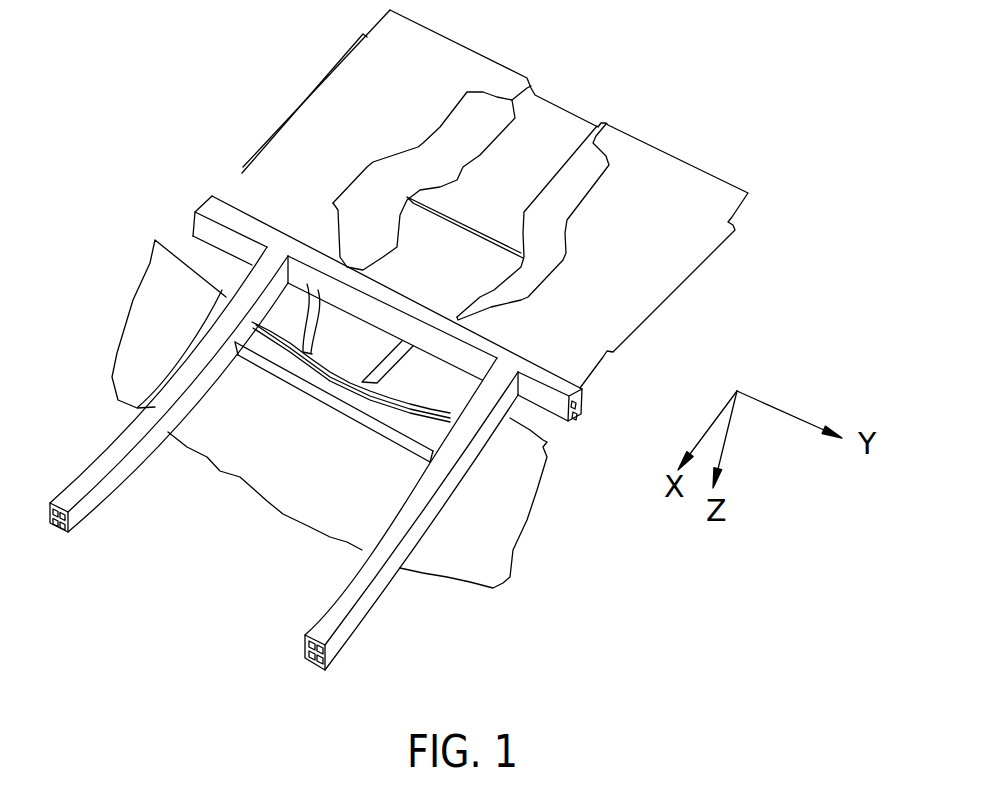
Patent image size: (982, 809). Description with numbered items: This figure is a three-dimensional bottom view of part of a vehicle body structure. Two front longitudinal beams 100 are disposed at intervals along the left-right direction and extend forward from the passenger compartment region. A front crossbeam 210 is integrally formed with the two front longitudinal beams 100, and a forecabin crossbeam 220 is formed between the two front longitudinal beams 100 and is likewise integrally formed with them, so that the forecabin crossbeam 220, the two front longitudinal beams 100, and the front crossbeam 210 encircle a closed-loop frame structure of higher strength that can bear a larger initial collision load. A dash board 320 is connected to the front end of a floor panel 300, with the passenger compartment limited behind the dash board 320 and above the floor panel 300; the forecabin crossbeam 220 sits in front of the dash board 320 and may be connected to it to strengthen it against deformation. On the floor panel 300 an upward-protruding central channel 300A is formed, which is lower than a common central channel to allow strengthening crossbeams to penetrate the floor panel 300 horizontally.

The front longitudinal beam 100 is at (108, 470).
The front crossbeam 210 is at (240, 223).
The forecabin crossbeam 220 is at (330, 383).
The floor panel 300 is at (325, 128).
The central channel 300A is at (541, 130).
The dash board 320 is at (485, 548).